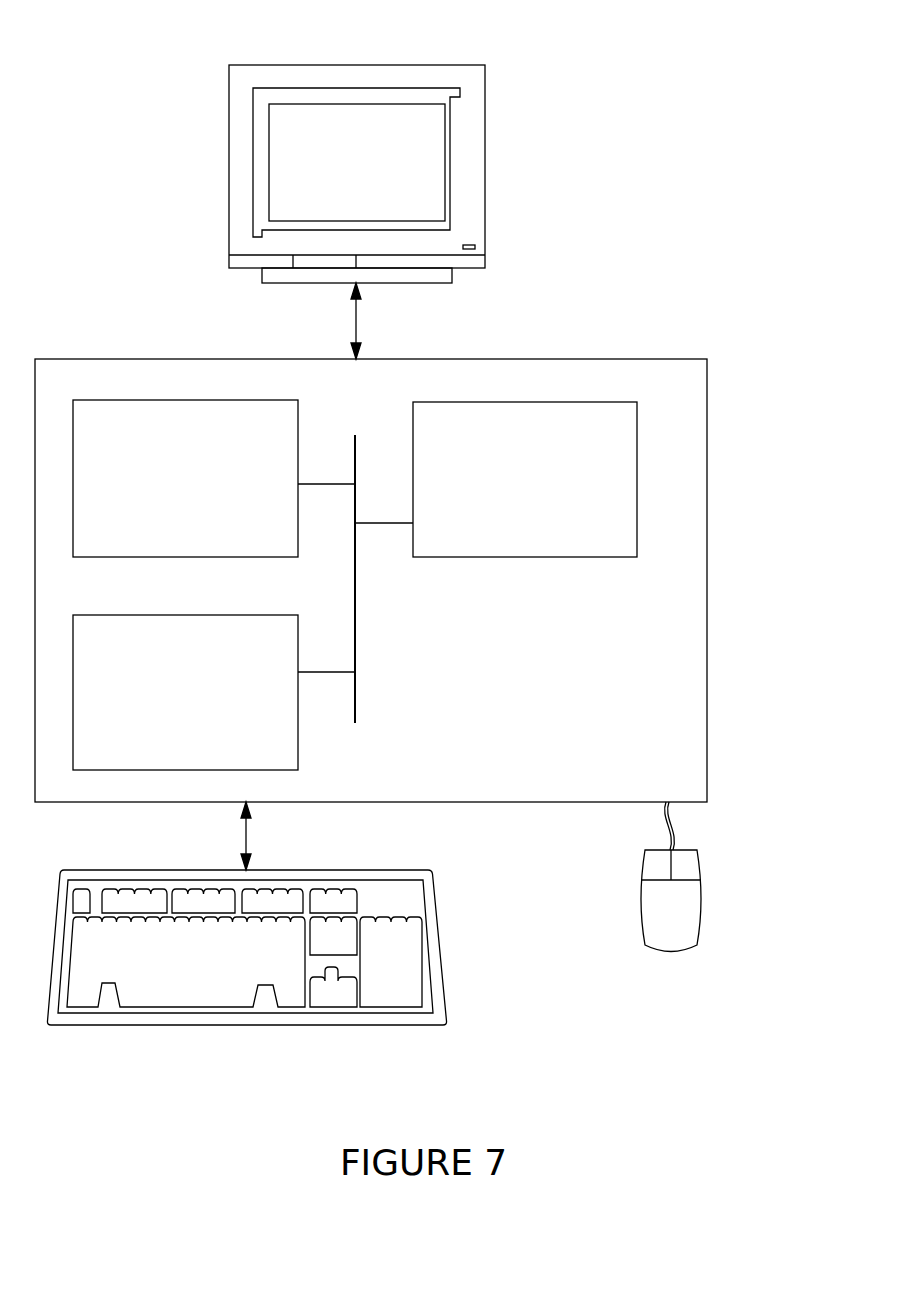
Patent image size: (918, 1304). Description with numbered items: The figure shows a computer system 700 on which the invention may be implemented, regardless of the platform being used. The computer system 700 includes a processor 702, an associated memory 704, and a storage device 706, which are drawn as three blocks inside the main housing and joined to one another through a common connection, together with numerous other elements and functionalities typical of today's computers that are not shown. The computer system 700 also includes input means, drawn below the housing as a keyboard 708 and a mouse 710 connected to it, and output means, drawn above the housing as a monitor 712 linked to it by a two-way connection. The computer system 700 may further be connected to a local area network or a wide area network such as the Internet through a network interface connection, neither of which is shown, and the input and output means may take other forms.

The computer system 700 is at (726, 218).
The processor 702 is at (165, 489).
The associated memory 704 is at (162, 706).
The storage device 706 is at (501, 491).
The keyboard 708 is at (183, 974).
The mouse 710 is at (650, 922).
The monitor 712 is at (335, 179).